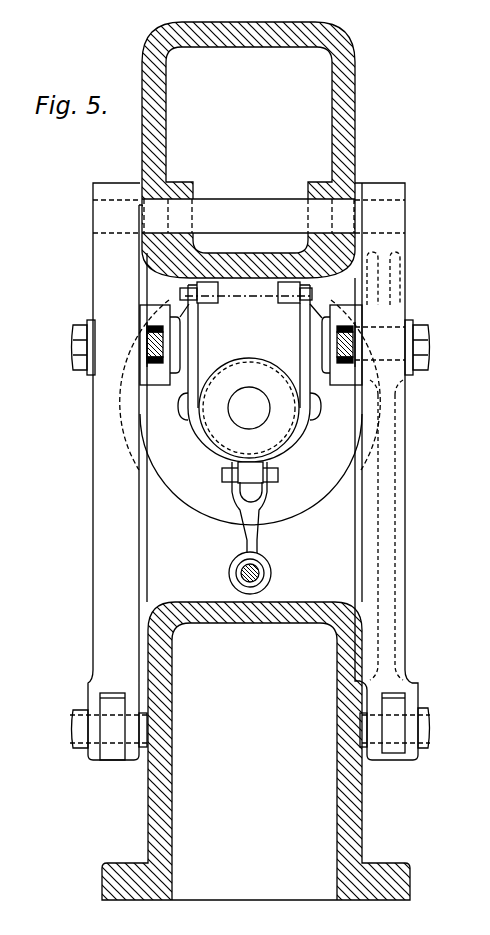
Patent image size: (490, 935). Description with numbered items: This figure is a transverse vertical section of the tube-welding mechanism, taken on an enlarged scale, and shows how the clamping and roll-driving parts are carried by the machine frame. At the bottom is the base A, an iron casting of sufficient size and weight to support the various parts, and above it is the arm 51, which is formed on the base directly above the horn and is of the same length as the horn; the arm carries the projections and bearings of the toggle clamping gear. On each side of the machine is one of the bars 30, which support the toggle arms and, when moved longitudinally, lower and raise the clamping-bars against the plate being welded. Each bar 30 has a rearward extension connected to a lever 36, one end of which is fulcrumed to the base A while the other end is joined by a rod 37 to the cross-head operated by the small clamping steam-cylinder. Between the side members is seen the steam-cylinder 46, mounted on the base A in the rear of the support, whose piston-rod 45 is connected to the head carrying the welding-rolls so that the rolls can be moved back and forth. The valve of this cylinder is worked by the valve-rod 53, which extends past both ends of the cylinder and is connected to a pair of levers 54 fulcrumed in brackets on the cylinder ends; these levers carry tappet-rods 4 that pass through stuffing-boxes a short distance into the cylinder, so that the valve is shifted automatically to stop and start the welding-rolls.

The arm 51 is at (248, 150).
The lever 36 is at (415, 518).
The bars 30 is at (147, 348).
The steam-cylinder 46 is at (250, 403).
The piston-rod 45 is at (249, 408).
The tappet-rods 4 is at (250, 473).
The levers 54 is at (258, 512).
The valve-rod 53 is at (268, 566).
The base A is at (256, 751).
The rod 37 is at (250, 726).